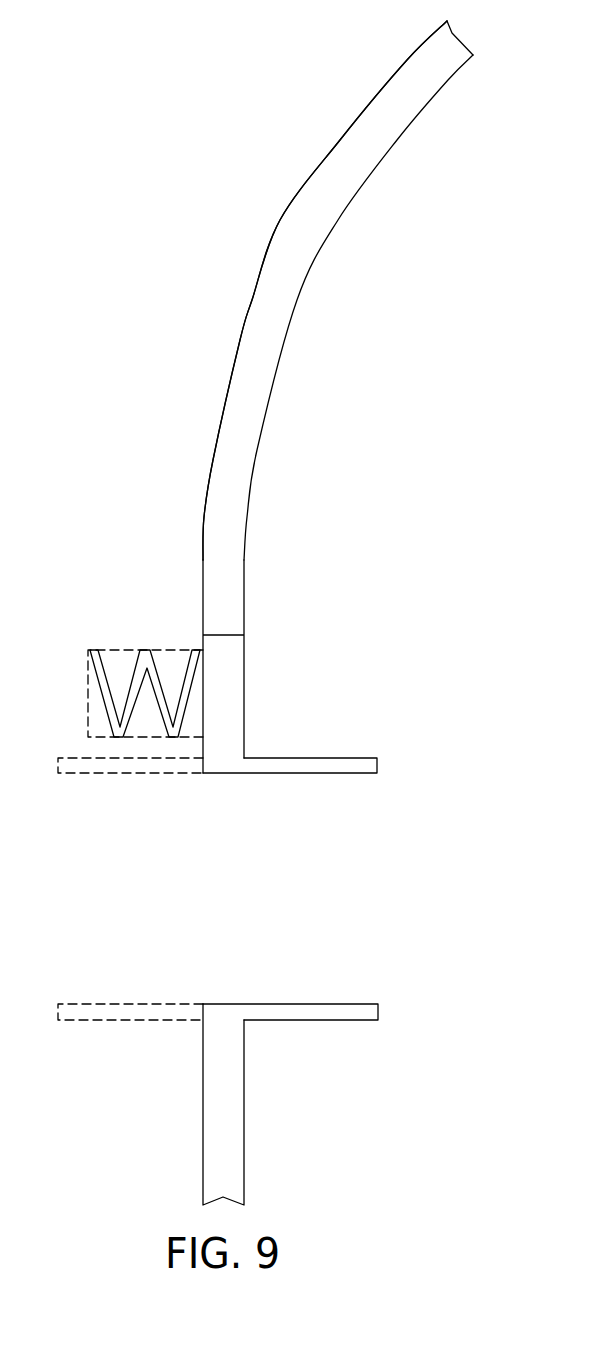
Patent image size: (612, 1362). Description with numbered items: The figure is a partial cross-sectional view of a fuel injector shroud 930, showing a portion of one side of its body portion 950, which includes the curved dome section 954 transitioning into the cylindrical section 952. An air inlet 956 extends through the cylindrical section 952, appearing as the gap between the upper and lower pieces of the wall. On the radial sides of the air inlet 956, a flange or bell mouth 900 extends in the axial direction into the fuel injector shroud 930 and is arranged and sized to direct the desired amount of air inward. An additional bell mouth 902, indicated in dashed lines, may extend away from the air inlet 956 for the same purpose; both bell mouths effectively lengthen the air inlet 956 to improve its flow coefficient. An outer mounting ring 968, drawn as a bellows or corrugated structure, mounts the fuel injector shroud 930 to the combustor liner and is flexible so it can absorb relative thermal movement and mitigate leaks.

The fuel injector shroud 930 is at (118, 121).
The body portion 950 is at (356, 215).
The dome section 954 is at (248, 342).
The cylindrical section 952 is at (244, 1117).
The bell mouth 900 is at (342, 758).
The bell mouth 902 is at (100, 775).
The outer mounting ring 968 is at (107, 648).
The air inlet 956 is at (263, 890).